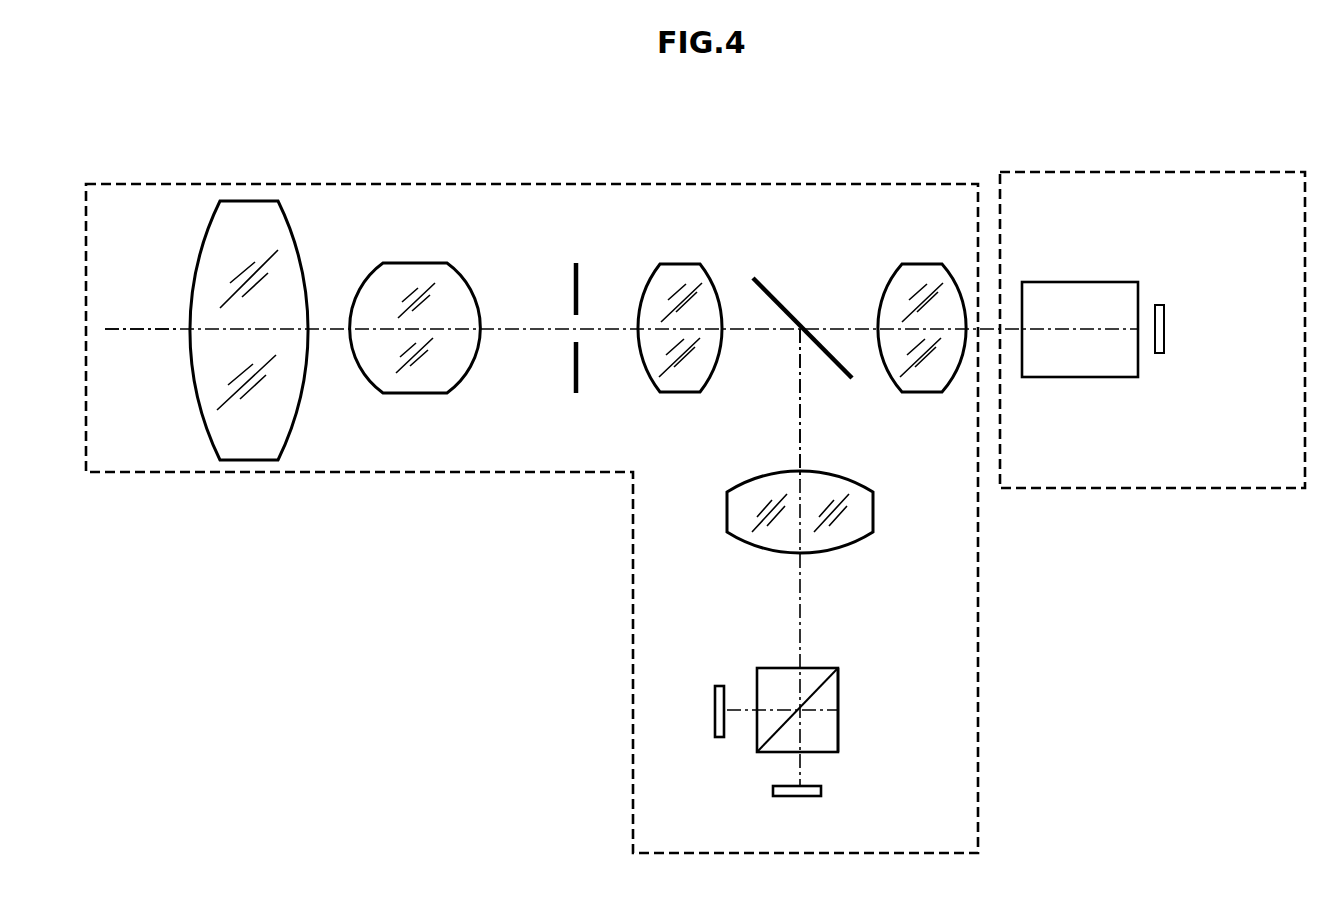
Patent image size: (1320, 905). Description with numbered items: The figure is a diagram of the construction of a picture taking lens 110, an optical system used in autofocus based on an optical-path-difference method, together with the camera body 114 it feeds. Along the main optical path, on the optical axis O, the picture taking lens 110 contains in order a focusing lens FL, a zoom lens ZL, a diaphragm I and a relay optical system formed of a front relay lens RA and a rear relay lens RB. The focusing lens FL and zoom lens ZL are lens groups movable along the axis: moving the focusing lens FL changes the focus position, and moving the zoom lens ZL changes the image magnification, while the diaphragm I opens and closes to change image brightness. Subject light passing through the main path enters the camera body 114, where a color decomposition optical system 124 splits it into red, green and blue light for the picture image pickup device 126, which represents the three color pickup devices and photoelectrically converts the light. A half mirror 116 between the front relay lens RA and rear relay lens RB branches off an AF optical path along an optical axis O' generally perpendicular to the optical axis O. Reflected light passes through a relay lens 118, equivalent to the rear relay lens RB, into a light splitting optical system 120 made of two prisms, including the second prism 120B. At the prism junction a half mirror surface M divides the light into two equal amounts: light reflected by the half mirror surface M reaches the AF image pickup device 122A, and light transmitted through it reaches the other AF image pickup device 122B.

The picture taking lens 110 is at (782, 184).
The camera body 114 is at (1155, 172).
The half mirror 116 is at (794, 307).
The relay lens 118 is at (875, 512).
The light splitting optical system 120 is at (765, 668).
The second prism 120B is at (840, 710).
The AF image pickup device 122A is at (710, 703).
The AF image pickup device 122B is at (823, 791).
The color decomposition optical system 124 is at (1084, 281).
The picture image pickup device 126 is at (1166, 329).
The focusing lens FL is at (252, 201).
The zoom lens ZL is at (418, 262).
The diaphragm I is at (577, 262).
The front relay lens RA is at (681, 263).
The rear relay lens RB is at (925, 263).
The half mirror surface M is at (822, 681).
The optical axis O is at (142, 300).
The optical axis O' is at (827, 404).